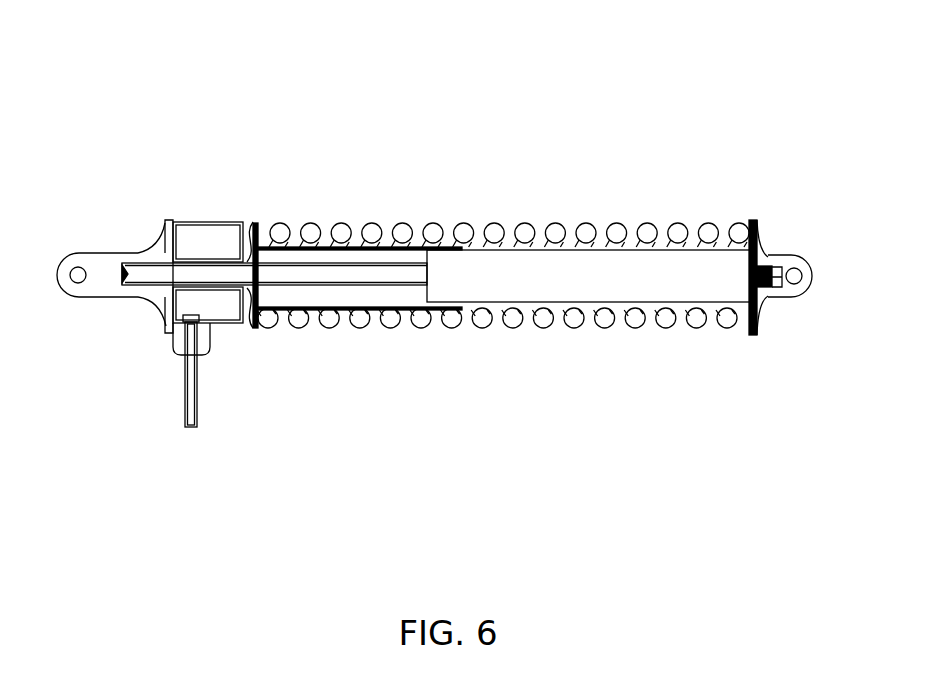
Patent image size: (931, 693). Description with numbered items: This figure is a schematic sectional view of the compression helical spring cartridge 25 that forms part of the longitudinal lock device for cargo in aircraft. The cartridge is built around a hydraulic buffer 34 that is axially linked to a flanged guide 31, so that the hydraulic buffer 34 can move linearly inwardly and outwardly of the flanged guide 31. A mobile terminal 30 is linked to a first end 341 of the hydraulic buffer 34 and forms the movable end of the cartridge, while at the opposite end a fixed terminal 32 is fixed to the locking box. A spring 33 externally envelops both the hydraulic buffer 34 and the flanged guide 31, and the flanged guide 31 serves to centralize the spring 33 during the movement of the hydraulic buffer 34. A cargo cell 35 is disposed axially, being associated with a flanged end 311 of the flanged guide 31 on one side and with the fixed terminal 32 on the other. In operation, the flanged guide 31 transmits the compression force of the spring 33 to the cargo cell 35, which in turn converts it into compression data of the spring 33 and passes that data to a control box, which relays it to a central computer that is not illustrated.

The compression helical spring cartridge 25 is at (303, 128).
The mobile terminal 30 is at (793, 250).
The flanged guide 31 is at (310, 318).
The flanged end 311 is at (252, 222).
The fixed terminal 32 is at (118, 298).
The spring 33 is at (560, 223).
The hydraulic buffer 34 is at (503, 288).
The first end 341 is at (770, 286).
The cargo cell 35 is at (223, 330).